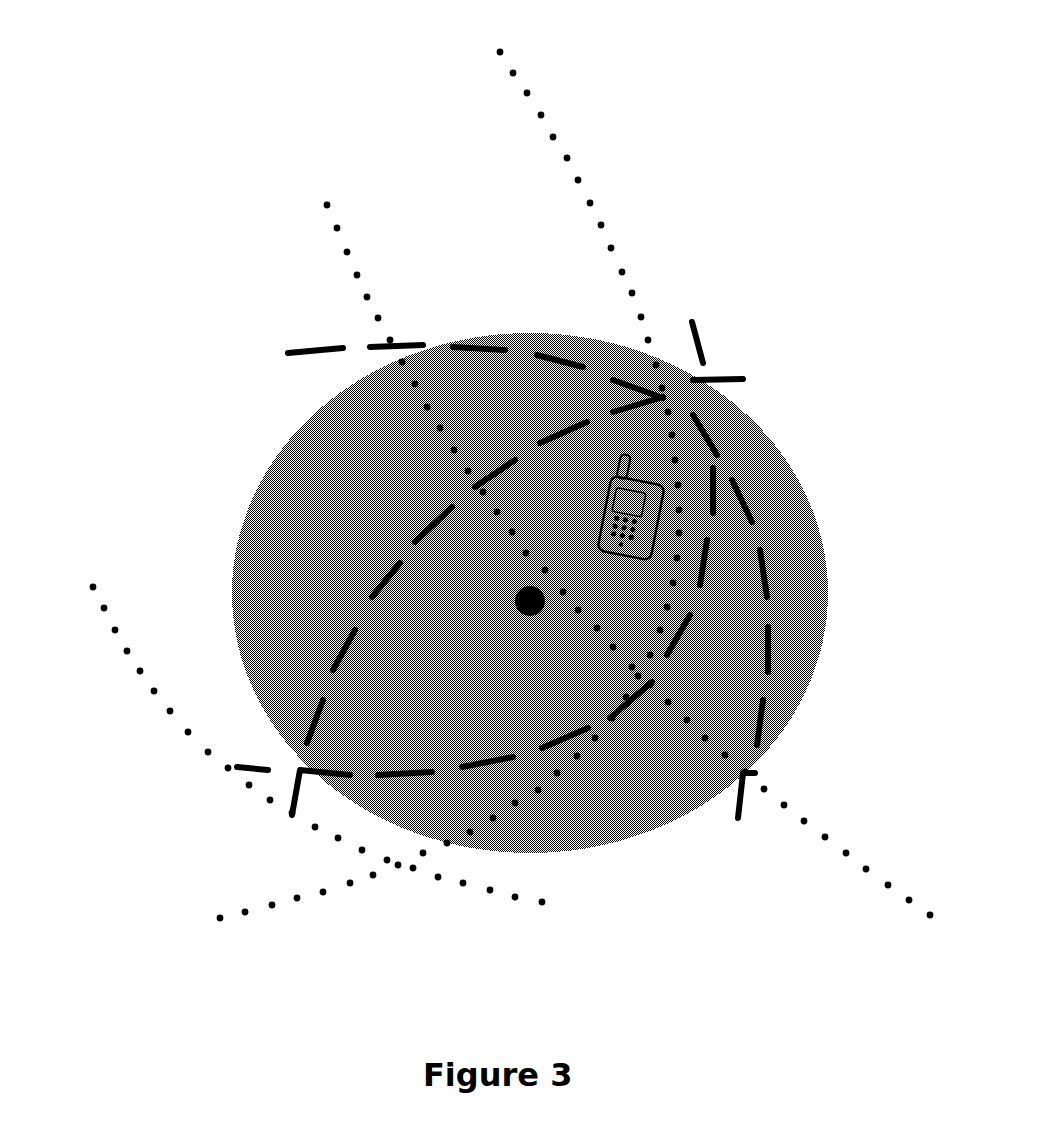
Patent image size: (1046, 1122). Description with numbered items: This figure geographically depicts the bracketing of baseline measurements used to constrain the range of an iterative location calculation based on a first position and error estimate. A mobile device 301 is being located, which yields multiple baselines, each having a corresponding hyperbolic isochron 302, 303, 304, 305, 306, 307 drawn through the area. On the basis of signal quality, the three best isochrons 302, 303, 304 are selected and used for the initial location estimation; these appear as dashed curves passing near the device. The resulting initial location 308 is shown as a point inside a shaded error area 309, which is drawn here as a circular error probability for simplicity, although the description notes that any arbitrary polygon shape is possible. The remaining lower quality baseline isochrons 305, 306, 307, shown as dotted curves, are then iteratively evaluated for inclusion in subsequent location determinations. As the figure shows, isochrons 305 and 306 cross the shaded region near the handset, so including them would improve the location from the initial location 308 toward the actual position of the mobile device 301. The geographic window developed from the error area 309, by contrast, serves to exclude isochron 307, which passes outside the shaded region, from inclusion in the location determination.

The mobile device 301 is at (623, 580).
The hyperbolic isochron 302 is at (493, 545).
The hyperbolic isochron 303 is at (756, 375).
The hyperbolic isochron 304 is at (736, 672).
The hyperbolic isochron 305 is at (450, 465).
The hyperbolic isochron 306 is at (616, 536).
The hyperbolic isochron 307 is at (303, 718).
The initial location 308 is at (500, 597).
The error area 309 is at (280, 434).